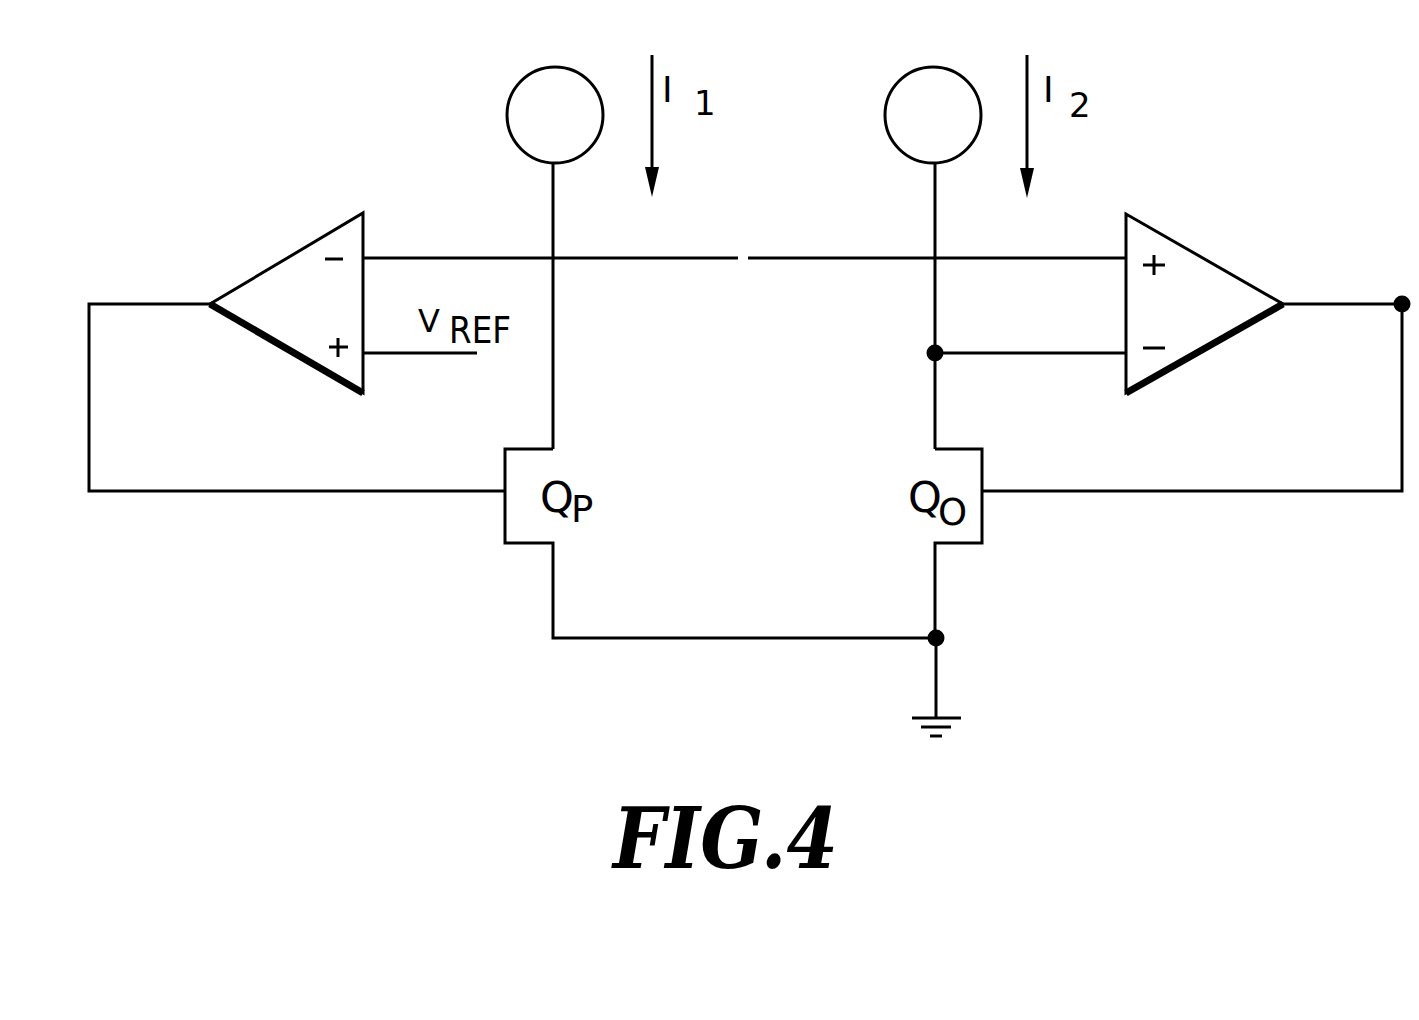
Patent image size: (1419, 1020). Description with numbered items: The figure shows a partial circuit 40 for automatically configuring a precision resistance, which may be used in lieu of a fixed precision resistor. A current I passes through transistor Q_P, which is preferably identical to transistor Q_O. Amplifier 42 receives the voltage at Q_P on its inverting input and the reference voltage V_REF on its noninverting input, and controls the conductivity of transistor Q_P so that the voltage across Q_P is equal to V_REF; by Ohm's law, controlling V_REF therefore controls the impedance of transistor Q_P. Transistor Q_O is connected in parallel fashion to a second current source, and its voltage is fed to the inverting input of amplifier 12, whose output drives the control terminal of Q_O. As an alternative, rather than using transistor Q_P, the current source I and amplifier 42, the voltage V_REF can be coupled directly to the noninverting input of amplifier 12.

The amplifier 12 is at (1193, 253).
The amplifier 42 is at (273, 342).
The partial circuit 40 is at (482, 620).